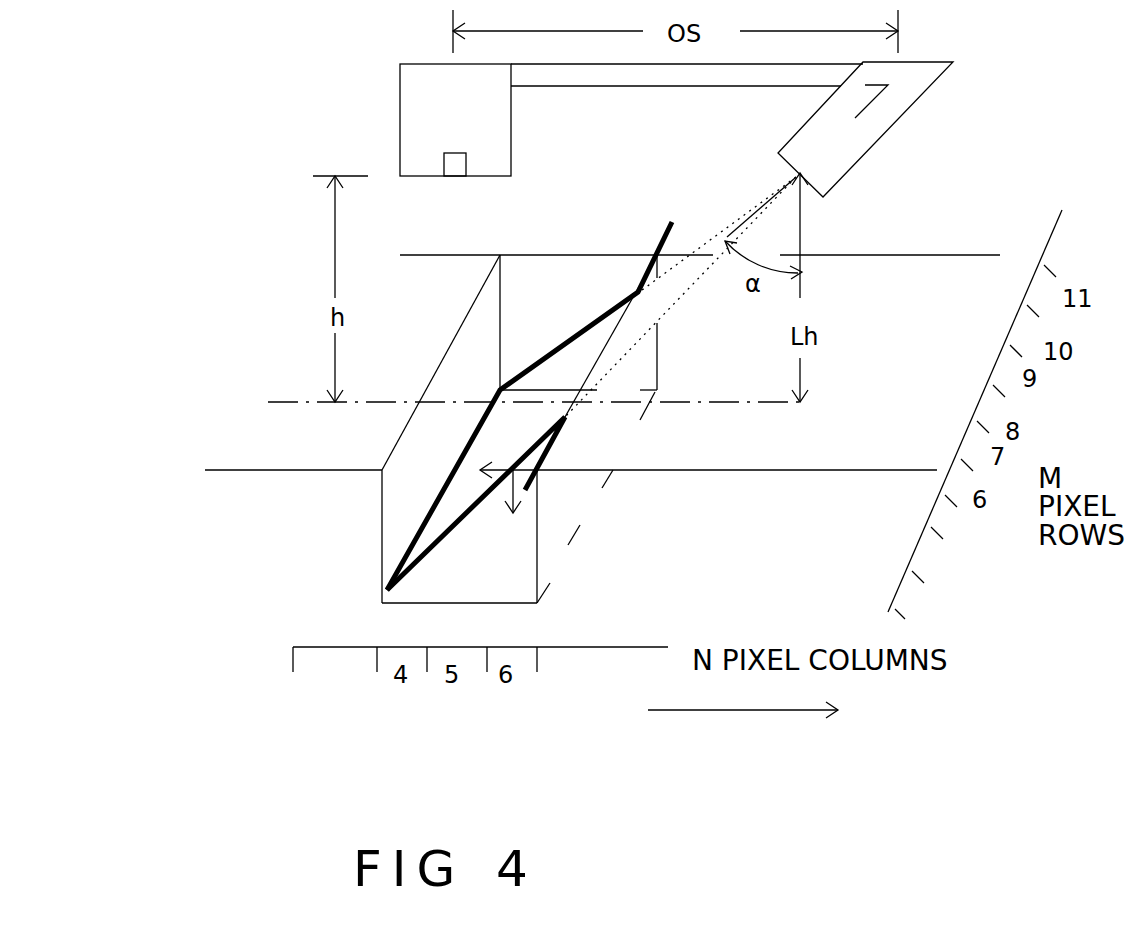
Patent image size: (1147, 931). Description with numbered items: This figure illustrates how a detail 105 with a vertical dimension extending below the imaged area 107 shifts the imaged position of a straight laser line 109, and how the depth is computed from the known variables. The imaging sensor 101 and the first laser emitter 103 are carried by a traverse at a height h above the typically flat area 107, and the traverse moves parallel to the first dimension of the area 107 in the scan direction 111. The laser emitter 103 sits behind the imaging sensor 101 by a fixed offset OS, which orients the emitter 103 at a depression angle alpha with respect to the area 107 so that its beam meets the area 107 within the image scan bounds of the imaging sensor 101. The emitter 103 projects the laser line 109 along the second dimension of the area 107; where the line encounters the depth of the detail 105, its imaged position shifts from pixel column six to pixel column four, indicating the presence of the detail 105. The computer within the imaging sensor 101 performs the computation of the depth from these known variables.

The imaging sensor 101 is at (445, 143).
The first laser emitter 103 is at (922, 107).
The three dimensional detail 105 is at (667, 343).
The area 107 is at (790, 480).
The first laser line 109 is at (402, 544).
The scan direction 111 is at (877, 701).